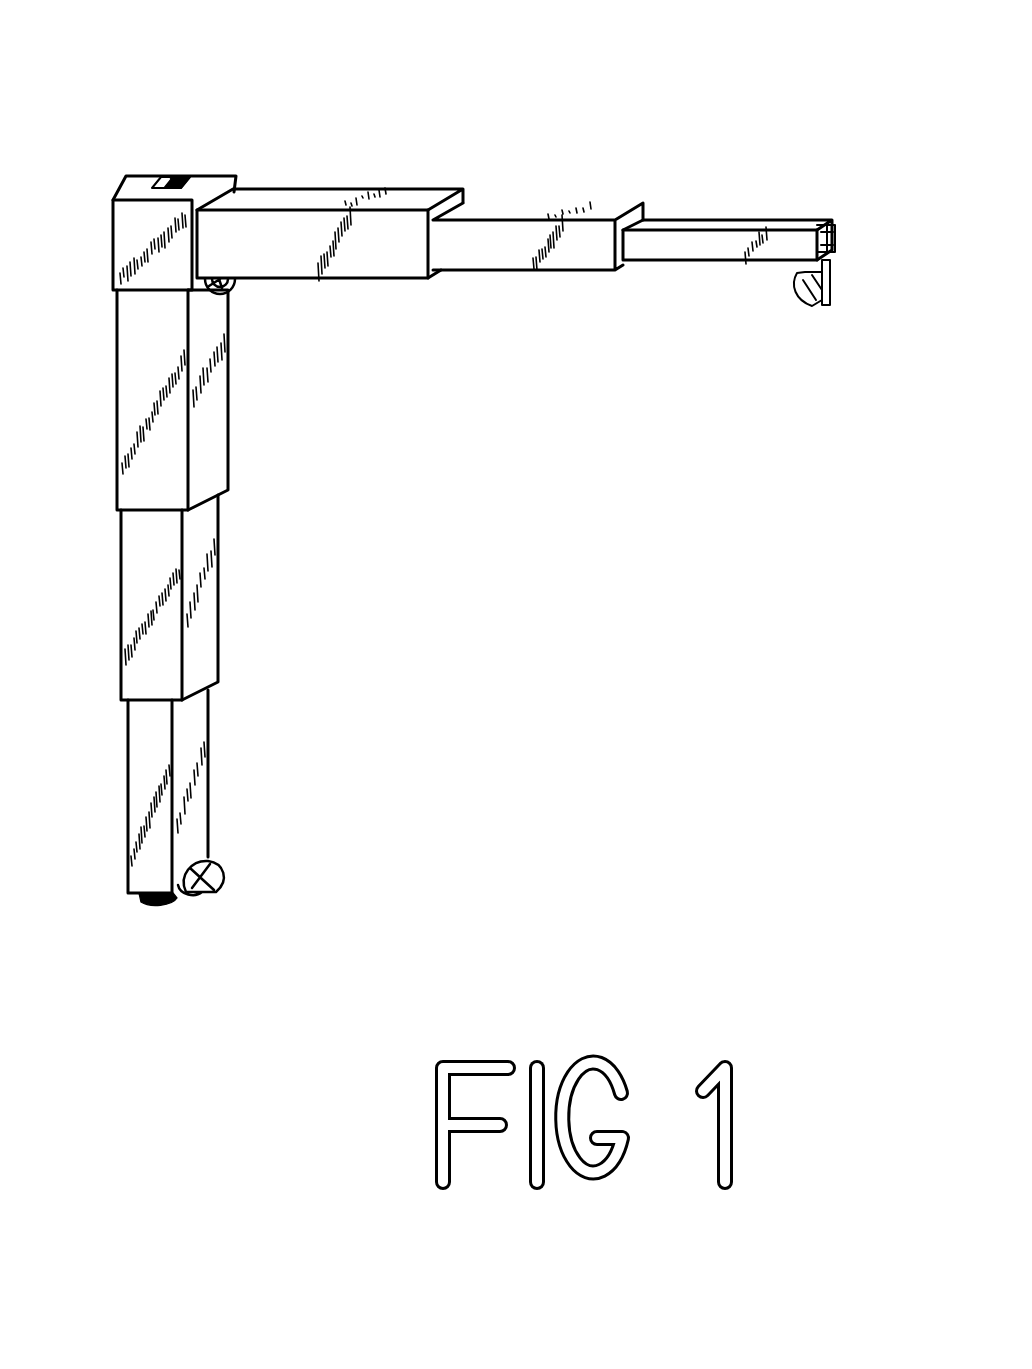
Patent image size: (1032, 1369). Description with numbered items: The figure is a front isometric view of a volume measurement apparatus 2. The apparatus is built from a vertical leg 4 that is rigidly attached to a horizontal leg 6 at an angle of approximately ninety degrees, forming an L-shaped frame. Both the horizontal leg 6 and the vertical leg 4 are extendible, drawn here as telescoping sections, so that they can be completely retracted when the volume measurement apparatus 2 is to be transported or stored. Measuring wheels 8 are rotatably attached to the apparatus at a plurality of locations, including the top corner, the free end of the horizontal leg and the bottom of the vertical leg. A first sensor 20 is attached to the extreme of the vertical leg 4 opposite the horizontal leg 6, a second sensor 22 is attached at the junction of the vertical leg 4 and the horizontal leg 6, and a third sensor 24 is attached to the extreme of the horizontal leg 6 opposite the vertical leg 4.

The volume measurement apparatus 2 is at (602, 112).
The vertical leg 4 is at (117, 378).
The horizontal leg 6 is at (338, 188).
The measuring wheels 8 is at (176, 177).
The first sensor 20 is at (225, 866).
The second sensor 22 is at (233, 293).
The third sensor 24 is at (810, 300).